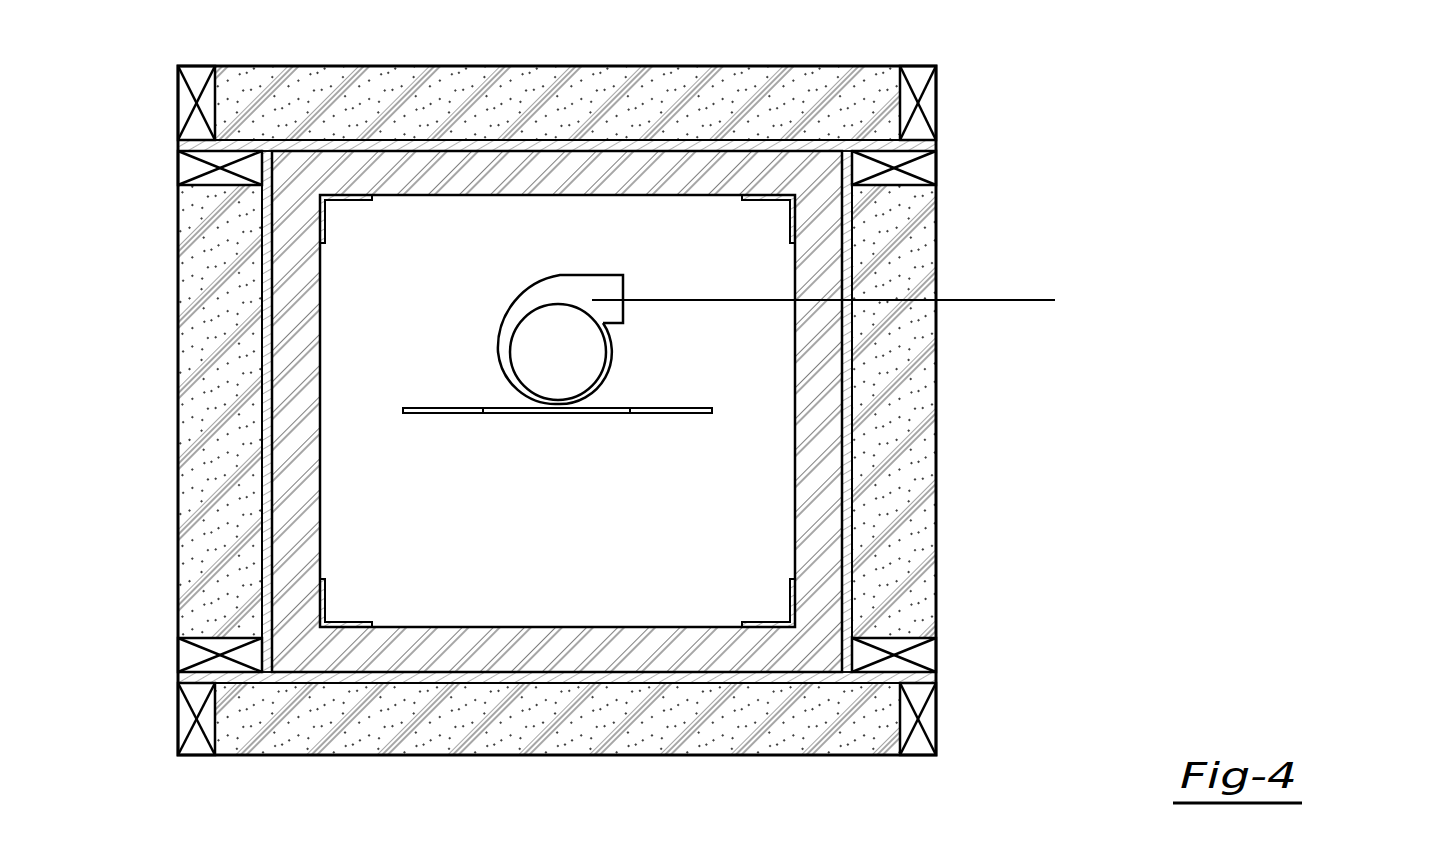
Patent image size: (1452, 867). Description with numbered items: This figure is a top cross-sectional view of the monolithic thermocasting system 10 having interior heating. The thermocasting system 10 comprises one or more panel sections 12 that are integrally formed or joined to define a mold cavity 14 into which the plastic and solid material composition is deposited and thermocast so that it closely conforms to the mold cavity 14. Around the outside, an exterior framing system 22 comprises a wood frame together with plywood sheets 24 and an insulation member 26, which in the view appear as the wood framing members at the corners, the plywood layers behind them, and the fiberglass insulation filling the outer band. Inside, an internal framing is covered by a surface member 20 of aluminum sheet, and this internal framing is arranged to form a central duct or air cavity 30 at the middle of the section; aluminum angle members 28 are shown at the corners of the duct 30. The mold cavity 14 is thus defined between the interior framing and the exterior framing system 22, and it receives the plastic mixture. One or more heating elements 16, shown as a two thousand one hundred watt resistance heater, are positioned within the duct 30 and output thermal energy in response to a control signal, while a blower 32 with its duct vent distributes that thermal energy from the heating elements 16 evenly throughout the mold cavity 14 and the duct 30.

The thermocasting system 10 is at (1000, 60).
The panel section 12 is at (178, 593).
The mold cavity 14 is at (810, 227).
The heating element 16 is at (712, 410).
The surface member 20 is at (936, 537).
The exterior framing system 22 is at (936, 168).
The plywood sheets 24 is at (852, 198).
The insulation member 26 is at (907, 381).
The 2x2x1/8 inch aluminum angle 28 is at (795, 568).
The duct 30 is at (573, 513).
The blower 32 is at (563, 351).